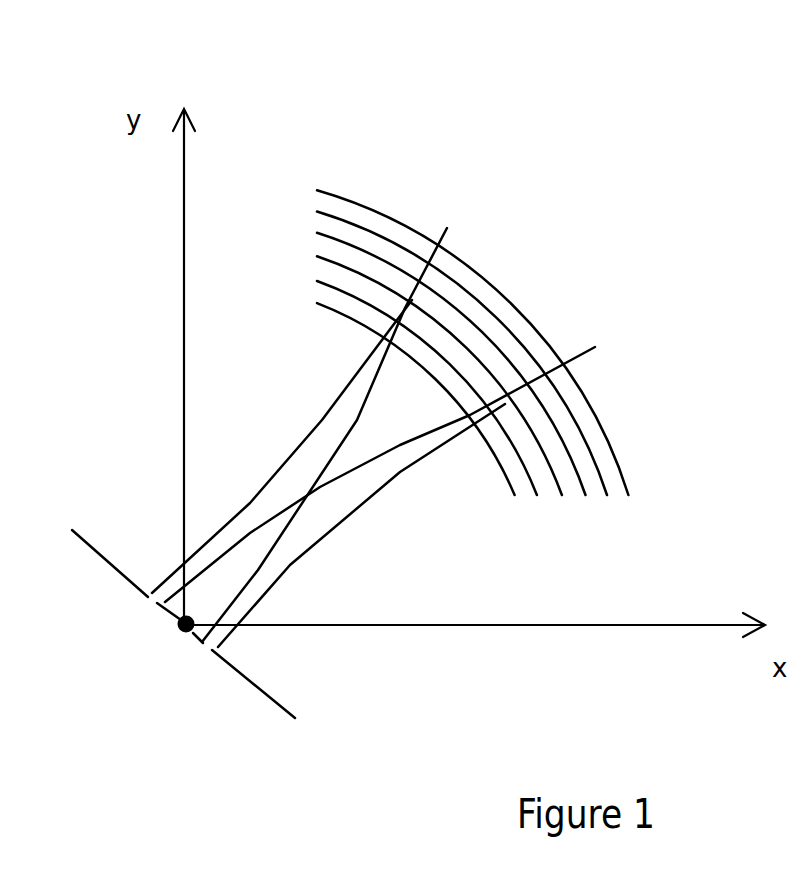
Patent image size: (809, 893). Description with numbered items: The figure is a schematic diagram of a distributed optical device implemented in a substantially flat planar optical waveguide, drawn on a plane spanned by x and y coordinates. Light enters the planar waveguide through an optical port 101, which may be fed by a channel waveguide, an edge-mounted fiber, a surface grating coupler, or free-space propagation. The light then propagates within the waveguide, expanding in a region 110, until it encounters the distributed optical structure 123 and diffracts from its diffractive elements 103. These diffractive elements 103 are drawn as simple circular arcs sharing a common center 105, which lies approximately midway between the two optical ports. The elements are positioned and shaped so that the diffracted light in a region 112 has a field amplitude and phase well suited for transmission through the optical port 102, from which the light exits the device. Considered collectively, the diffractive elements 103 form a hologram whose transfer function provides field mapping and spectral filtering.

The optical port 101 is at (191, 671).
The optical port 102 is at (135, 617).
The diffractive elements 103 is at (507, 357).
The common center 105 is at (166, 638).
The region 110 is at (353, 437).
The region 112 is at (373, 451).
The distributed optical structure 123 is at (490, 269).